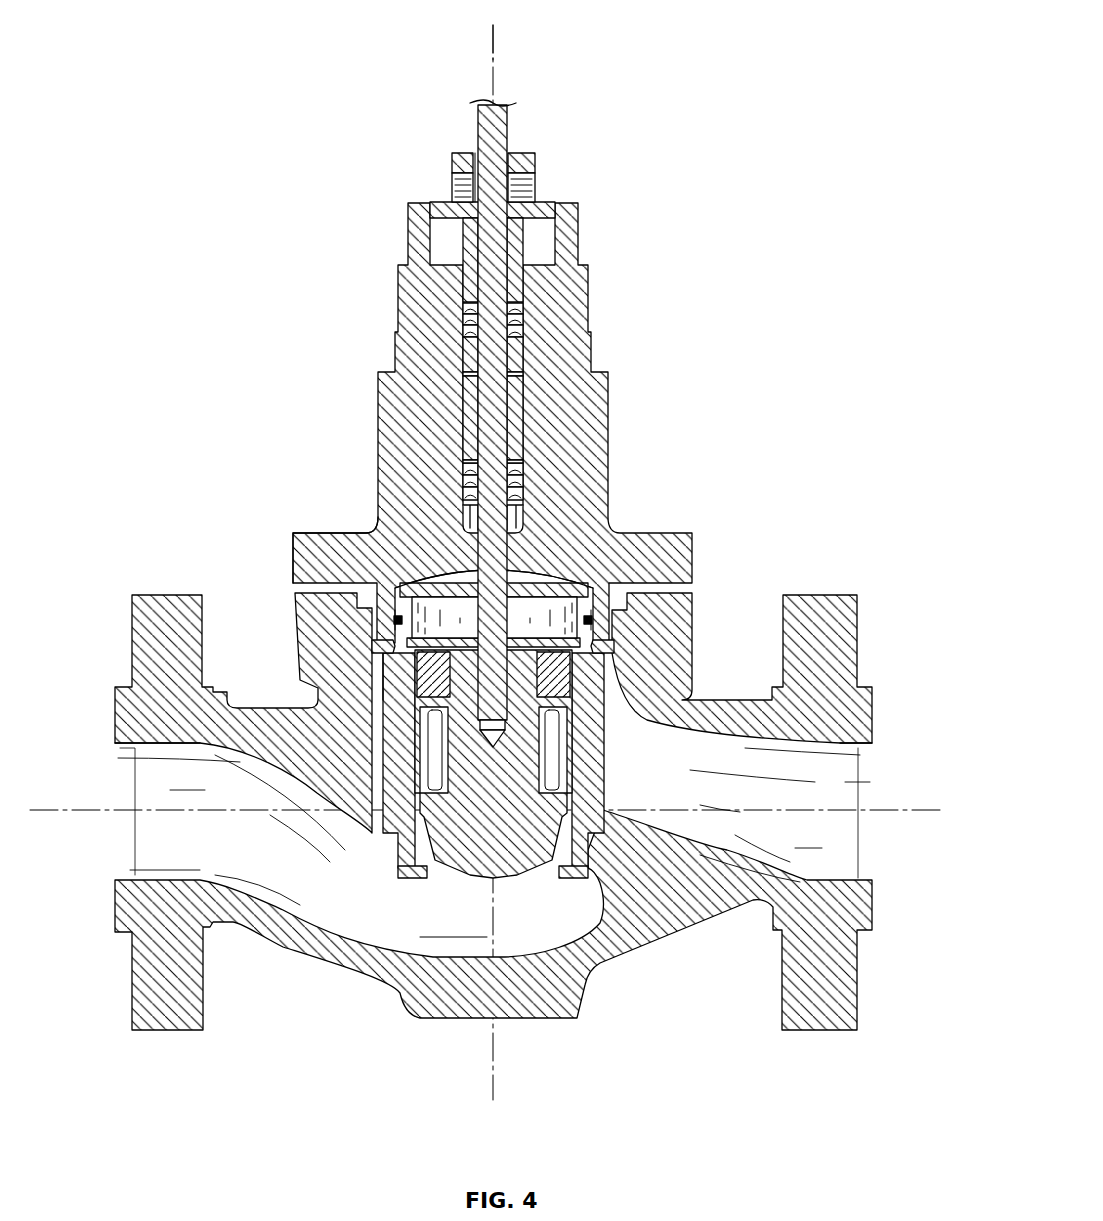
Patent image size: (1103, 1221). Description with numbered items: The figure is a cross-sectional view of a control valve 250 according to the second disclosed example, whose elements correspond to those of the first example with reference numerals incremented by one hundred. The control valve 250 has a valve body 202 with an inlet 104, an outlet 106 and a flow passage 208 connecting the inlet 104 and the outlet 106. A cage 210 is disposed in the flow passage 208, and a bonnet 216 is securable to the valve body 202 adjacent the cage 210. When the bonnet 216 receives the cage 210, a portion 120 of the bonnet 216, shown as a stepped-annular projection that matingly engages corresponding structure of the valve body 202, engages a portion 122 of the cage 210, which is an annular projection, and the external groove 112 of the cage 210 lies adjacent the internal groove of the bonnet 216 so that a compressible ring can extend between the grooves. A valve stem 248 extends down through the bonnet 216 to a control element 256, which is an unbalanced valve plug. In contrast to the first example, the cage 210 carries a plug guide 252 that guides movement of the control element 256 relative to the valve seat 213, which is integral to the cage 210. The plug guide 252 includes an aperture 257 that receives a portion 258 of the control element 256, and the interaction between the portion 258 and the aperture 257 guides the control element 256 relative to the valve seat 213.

The control valve 250 is at (714, 40).
The valve stem 248 is at (487, 337).
The bonnet 216 is at (590, 448).
The external groove 112 is at (372, 532).
The portion of the cage 122 is at (580, 598).
The portion of the bonnet 120 is at (600, 623).
The valve body 202 is at (852, 618).
The plug guide 252 is at (367, 660).
The aperture 257 is at (380, 680).
The inlet 104 is at (115, 736).
The outlet 106 is at (857, 727).
The portion of the control element 258 is at (527, 720).
The flow passage 208 is at (204, 860).
The cage 210 is at (397, 773).
The control element 256 is at (452, 833).
The valve seat 213 is at (410, 865).